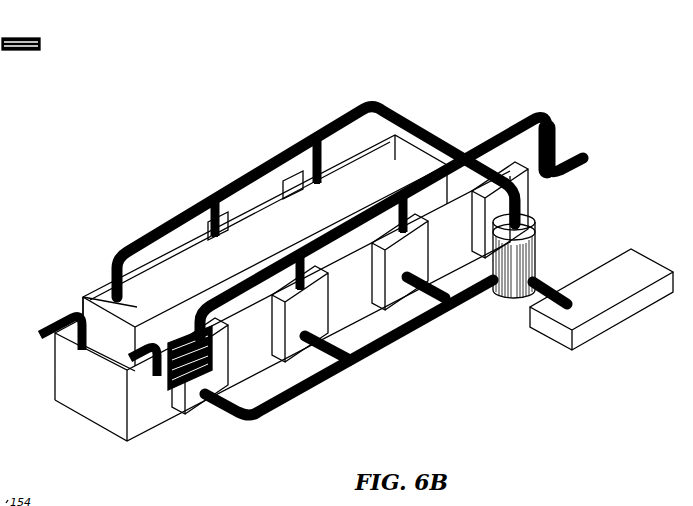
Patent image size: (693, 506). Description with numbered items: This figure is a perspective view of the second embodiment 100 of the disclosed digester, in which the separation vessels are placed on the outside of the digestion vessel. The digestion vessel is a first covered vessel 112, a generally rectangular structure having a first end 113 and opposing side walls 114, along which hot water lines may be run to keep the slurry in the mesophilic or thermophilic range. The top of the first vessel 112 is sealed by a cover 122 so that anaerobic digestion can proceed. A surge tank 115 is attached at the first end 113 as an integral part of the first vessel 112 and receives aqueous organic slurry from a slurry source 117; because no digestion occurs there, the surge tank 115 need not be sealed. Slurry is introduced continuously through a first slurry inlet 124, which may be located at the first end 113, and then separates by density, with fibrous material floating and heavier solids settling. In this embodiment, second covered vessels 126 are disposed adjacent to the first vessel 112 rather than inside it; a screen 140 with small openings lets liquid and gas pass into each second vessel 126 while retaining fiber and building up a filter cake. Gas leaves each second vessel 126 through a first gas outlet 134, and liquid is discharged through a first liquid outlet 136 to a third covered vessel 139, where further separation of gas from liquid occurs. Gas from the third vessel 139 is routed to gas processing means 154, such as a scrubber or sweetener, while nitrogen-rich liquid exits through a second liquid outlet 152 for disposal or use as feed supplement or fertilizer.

The second embodiment 100 is at (233, 175).
The first covered vessel 112 is at (380, 147).
The first end 113 is at (109, 334).
The opposing side walls 114 is at (350, 288).
The surge tank 115 is at (73, 380).
The slurry source 117 is at (55, 325).
The cover 122 is at (240, 221).
The first slurry inlet 124 is at (147, 338).
The second covered vessel 126 is at (270, 158).
The first gas outlet 134 is at (323, 153).
The first liquid outlet 136 is at (428, 297).
The third covered vessel 139 is at (537, 242).
The screen 140 is at (213, 363).
The second liquid outlet 152 is at (601, 299).
The gas processing means 154 is at (555, 148).